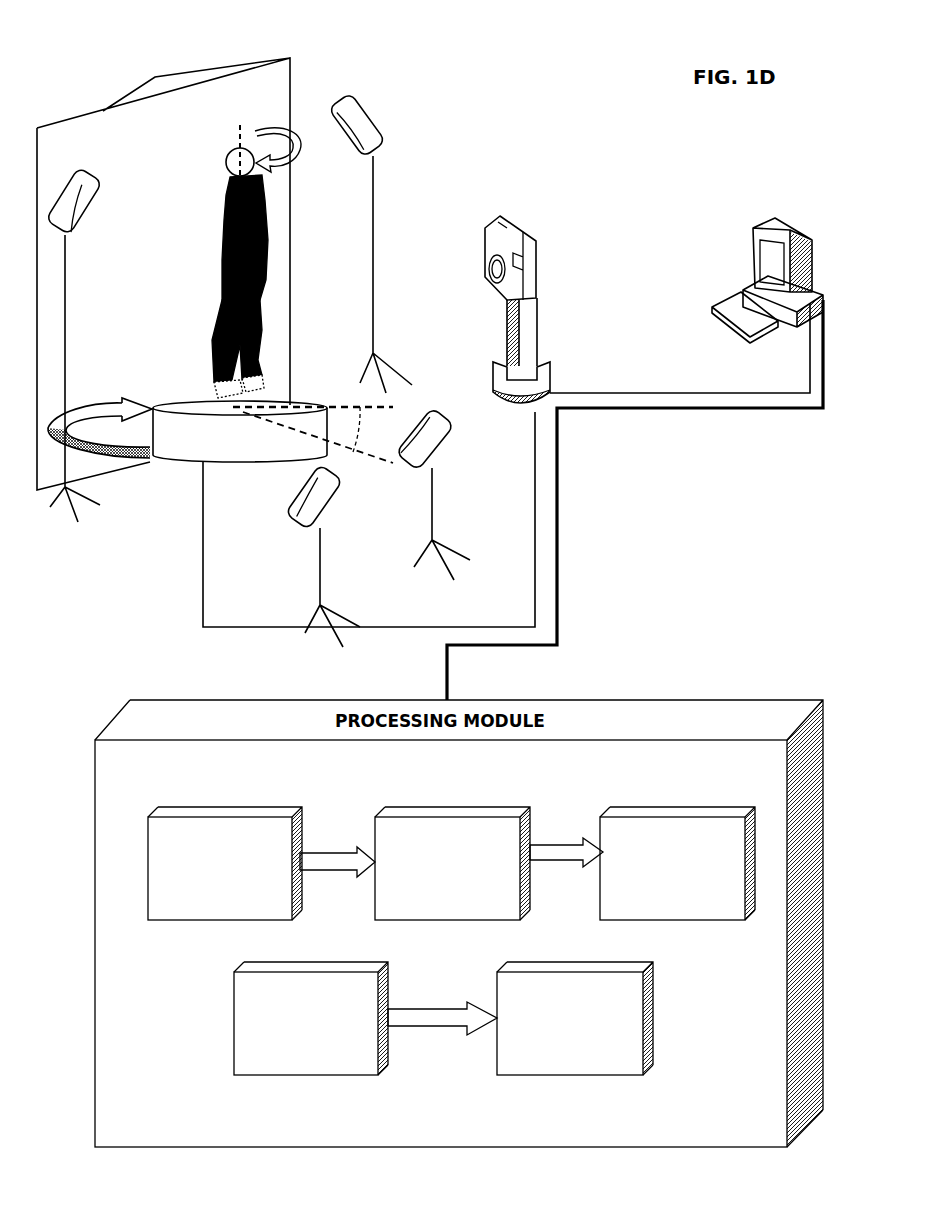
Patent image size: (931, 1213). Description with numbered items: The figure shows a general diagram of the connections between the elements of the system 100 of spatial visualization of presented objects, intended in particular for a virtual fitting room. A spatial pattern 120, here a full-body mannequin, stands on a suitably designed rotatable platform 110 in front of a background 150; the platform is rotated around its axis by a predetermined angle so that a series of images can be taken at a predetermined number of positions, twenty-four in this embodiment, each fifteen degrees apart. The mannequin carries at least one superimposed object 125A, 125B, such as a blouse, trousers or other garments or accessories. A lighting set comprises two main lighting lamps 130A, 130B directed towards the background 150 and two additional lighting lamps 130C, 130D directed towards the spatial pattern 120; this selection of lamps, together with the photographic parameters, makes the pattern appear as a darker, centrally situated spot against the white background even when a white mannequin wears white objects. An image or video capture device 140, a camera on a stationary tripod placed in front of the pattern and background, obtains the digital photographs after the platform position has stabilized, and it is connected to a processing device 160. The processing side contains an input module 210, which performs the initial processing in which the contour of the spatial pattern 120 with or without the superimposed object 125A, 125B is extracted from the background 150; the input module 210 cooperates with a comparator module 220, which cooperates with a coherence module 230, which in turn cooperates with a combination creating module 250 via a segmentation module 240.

The system of spatial visualization of presented objects 100 is at (537, 107).
The rotatable platform 110 is at (220, 457).
The spatial pattern 120 is at (237, 145).
The superimposed object 125A is at (215, 237).
The superimposed object 125B is at (211, 328).
The main lighting lamp 130A is at (379, 229).
The main lighting lamp 130B is at (97, 328).
The additional lighting lamp 130C is at (301, 555).
The additional lighting lamp 130D is at (420, 494).
The image or video capture device 140 is at (531, 299).
The background 150 is at (163, 274).
The processing device 160 is at (751, 280).
The input module 210 is at (207, 886).
The comparator module 220 is at (434, 886).
The coherence module 230 is at (659, 886).
The segmentation module 240 is at (293, 1038).
The combination creating module 250 is at (557, 1058).